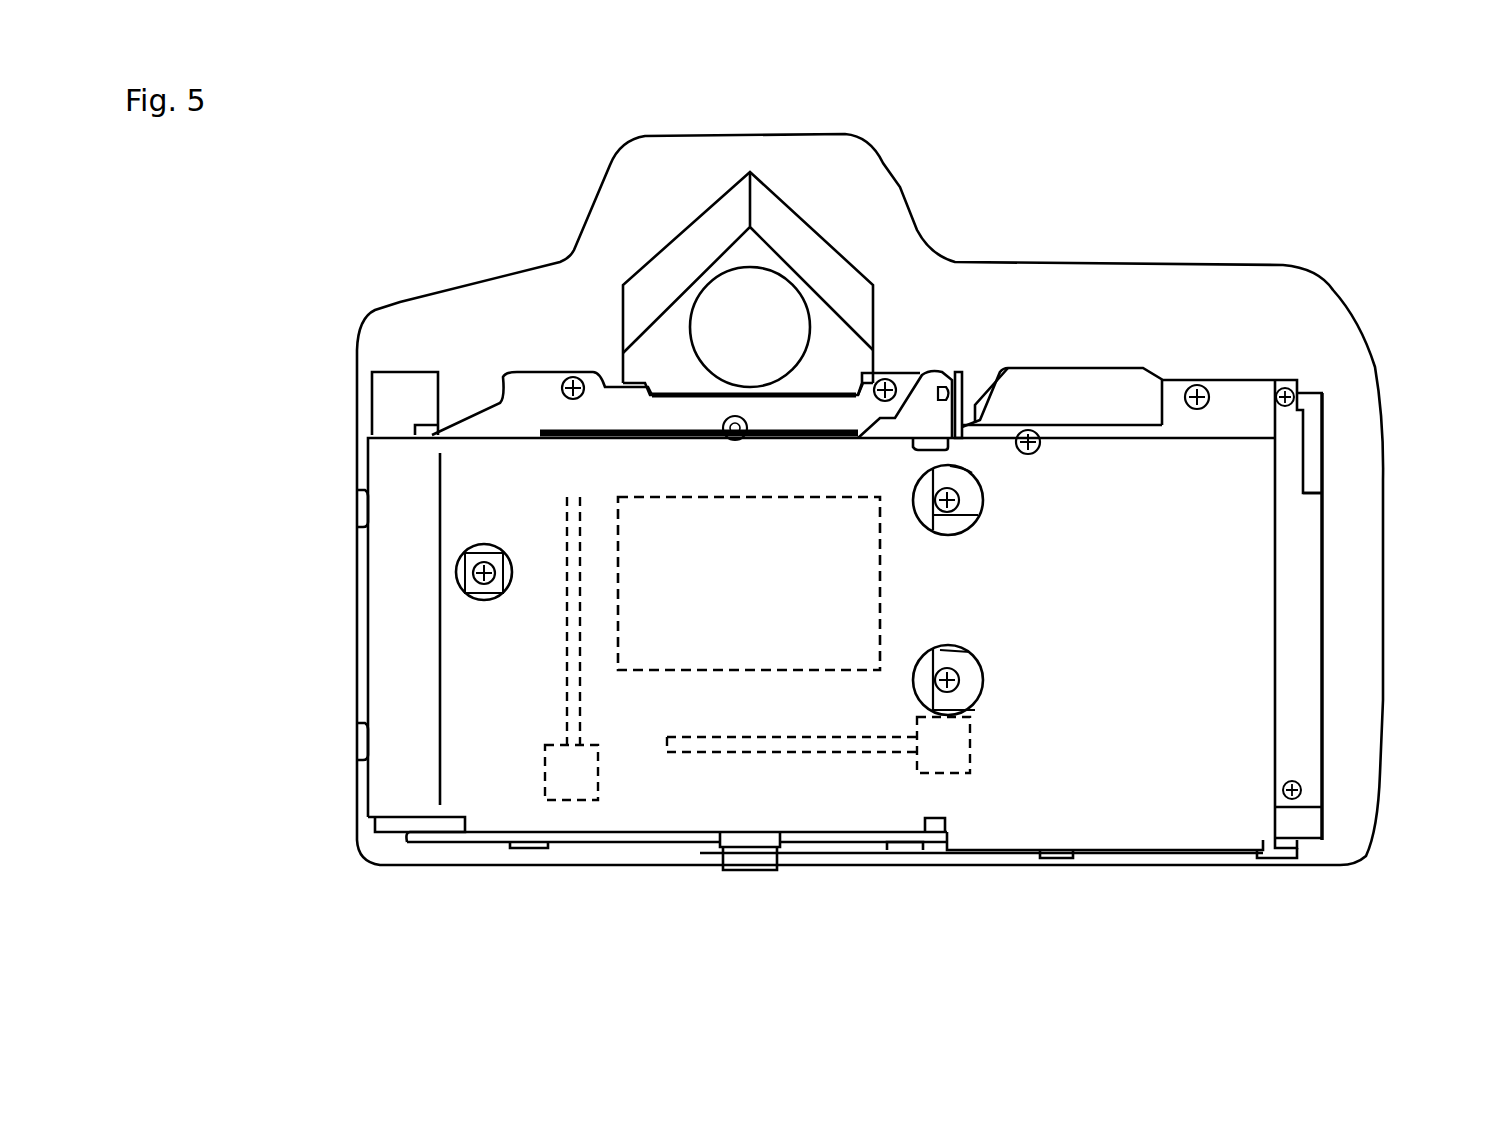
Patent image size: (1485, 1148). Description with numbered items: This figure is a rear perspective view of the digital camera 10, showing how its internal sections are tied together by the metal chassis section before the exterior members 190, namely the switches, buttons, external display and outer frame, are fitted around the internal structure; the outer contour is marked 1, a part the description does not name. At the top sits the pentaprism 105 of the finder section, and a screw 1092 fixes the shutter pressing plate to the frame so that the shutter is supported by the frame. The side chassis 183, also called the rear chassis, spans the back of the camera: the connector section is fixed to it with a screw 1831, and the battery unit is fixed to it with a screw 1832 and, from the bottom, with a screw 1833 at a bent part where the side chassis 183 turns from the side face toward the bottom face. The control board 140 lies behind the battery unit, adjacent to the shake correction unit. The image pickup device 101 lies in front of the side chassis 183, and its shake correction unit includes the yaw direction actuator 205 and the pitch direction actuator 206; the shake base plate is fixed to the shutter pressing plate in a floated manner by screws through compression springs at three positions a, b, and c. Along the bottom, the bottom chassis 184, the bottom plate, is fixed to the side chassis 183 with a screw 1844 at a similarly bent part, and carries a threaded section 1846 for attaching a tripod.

The digital camera 10 is at (1355, 267).
The camera body 1 is at (1205, 284).
The pentaprism 105 is at (677, 267).
The screws 1092 is at (573, 377).
The side chassis 183 is at (1230, 743).
The screw 1832 is at (1040, 448).
The exterior members 190 is at (1388, 492).
The control board 140 is at (1297, 642).
The screw 1831 is at (357, 502).
The position a is at (484, 600).
The position b is at (960, 500).
The position c is at (960, 680).
The image pickup device 101 is at (882, 605).
The pitch direction actuator 206 is at (560, 655).
The yaw direction actuator 205 is at (775, 752).
The bottom chassis 184 is at (493, 838).
The threaded section for tripod 1846 is at (746, 834).
The screw 1844 is at (530, 850).
The screw 1833 is at (1270, 858).